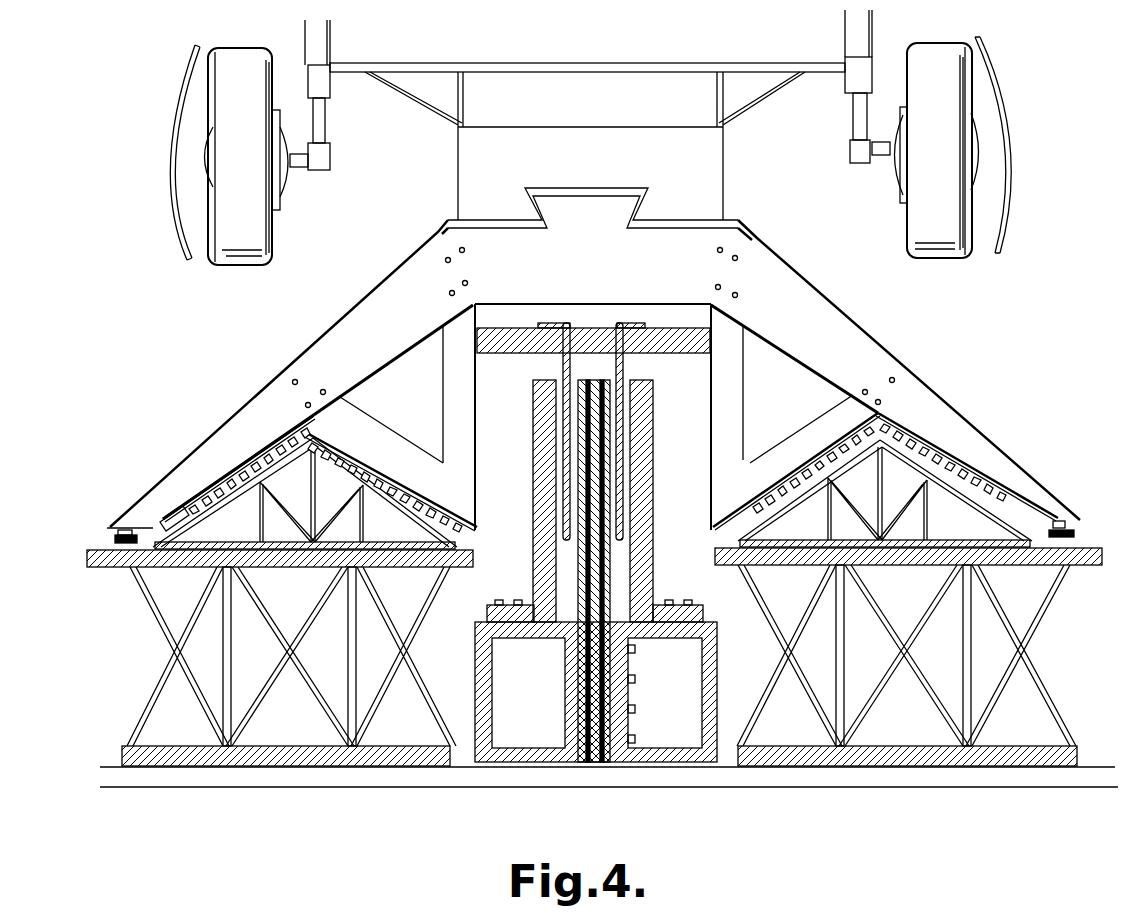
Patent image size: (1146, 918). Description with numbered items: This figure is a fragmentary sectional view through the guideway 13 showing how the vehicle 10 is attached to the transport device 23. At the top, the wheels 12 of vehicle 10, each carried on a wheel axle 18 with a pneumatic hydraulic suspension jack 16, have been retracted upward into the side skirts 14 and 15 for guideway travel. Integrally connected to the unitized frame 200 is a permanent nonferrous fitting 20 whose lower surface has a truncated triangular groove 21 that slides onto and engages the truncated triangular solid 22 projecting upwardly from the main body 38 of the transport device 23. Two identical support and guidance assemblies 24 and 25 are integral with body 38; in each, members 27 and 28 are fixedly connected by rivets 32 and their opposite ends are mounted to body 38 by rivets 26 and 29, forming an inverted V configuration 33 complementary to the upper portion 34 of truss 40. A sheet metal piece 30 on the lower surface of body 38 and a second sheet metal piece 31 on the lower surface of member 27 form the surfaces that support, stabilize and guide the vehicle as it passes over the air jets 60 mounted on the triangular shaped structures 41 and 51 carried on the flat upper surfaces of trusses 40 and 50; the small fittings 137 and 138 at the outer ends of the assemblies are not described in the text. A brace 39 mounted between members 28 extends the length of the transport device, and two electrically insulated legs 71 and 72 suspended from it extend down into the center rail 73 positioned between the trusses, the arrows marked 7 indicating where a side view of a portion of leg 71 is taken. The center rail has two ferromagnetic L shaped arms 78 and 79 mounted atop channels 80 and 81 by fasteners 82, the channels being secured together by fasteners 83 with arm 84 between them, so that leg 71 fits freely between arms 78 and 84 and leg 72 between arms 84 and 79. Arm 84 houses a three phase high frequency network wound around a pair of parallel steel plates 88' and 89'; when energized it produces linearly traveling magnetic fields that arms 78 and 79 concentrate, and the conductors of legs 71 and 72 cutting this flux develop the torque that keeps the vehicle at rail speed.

The section line 7 is at (512, 369).
The vehicle 10 is at (1040, 78).
The wheels 12 is at (245, 262).
The guideway 13 is at (1035, 422).
The skirt 14 is at (172, 183).
The skirt 15 is at (1007, 148).
The pneumatic hydraulic suspension jack 16 is at (333, 68).
The wheel axle 18 is at (300, 167).
The fitting 20 is at (585, 146).
The truncated triangular groove 21 is at (650, 195).
The truncated triangular solid 22 is at (593, 208).
The transport device 23 is at (810, 252).
The support and guidance assembly 24 is at (830, 300).
The support and guidance assembly 25 is at (262, 344).
The rivets 26 is at (291, 382).
The member 27 is at (596, 429).
The member 28 is at (456, 393).
The rivets 29 is at (452, 262).
The sheet metal piece 30 is at (215, 483).
The second sheet metal piece 31 is at (393, 482).
The rivets 32 is at (467, 491).
The inverted V configuration 33 is at (303, 426).
The upper portion of truss 34 is at (318, 548).
The main body 38 is at (595, 373).
The brace 39 is at (600, 330).
The truss 40 is at (142, 657).
The triangular shaped structure 41 is at (305, 493).
The truss 50 is at (1072, 640).
The triangular shaped structure 51 is at (885, 493).
The air jets 60 is at (240, 492).
The leg 71 is at (560, 429).
The leg 72 is at (624, 436).
The center rail 73 is at (641, 792).
The L shaped arm 78 is at (542, 552).
The L shaped arm 79 is at (648, 575).
The channel 80 is at (506, 762).
The channel 81 is at (712, 654).
The fasteners 82 is at (497, 604).
The fasteners 83 is at (636, 680).
The arm 84 is at (597, 762).
The steel plate 88' is at (550, 431).
The steel plate 89' is at (640, 431).
The stop block 137 is at (176, 510).
The foot 138 is at (158, 528).
The frame 200 is at (550, 63).